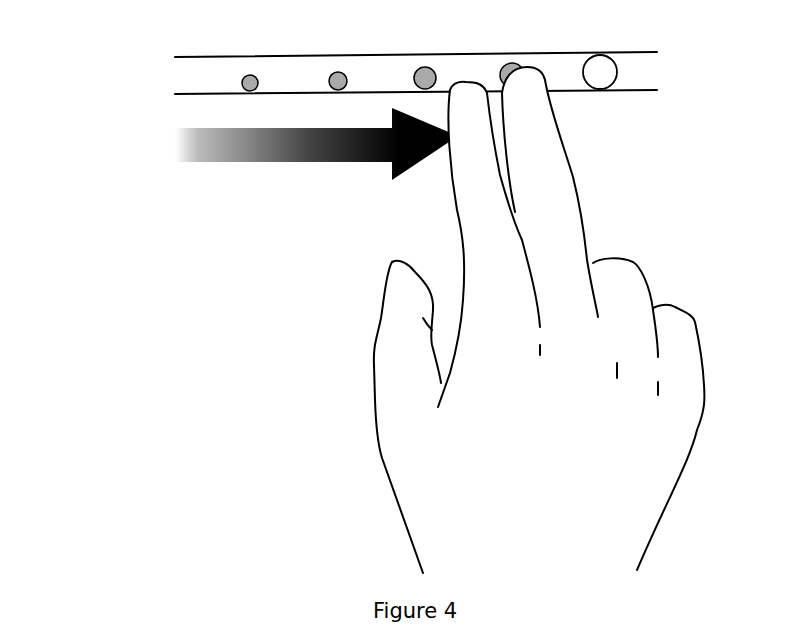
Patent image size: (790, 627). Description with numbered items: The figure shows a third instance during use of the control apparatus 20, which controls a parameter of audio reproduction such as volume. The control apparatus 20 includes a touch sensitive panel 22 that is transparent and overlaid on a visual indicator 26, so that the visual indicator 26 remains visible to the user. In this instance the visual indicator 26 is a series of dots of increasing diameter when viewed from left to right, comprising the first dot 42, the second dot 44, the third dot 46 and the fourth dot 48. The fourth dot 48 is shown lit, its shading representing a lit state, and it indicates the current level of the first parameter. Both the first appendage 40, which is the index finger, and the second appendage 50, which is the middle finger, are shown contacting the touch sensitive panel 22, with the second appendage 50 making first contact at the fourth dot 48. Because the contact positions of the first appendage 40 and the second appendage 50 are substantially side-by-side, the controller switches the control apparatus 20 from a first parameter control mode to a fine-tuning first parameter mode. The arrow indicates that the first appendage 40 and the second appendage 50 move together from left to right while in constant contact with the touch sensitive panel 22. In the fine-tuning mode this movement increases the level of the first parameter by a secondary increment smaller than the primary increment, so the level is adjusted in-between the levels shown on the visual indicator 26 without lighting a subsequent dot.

The control apparatus 20 is at (158, 90).
The touch sensitive panel 22 is at (637, 68).
The visual indicator 26 is at (620, 85).
The first appendage 40 is at (467, 136).
The first dot 42 is at (258, 75).
The second dot 44 is at (340, 72).
The third dot 46 is at (425, 67).
The fourth dot 48 is at (507, 64).
The second appendage 50 is at (540, 108).